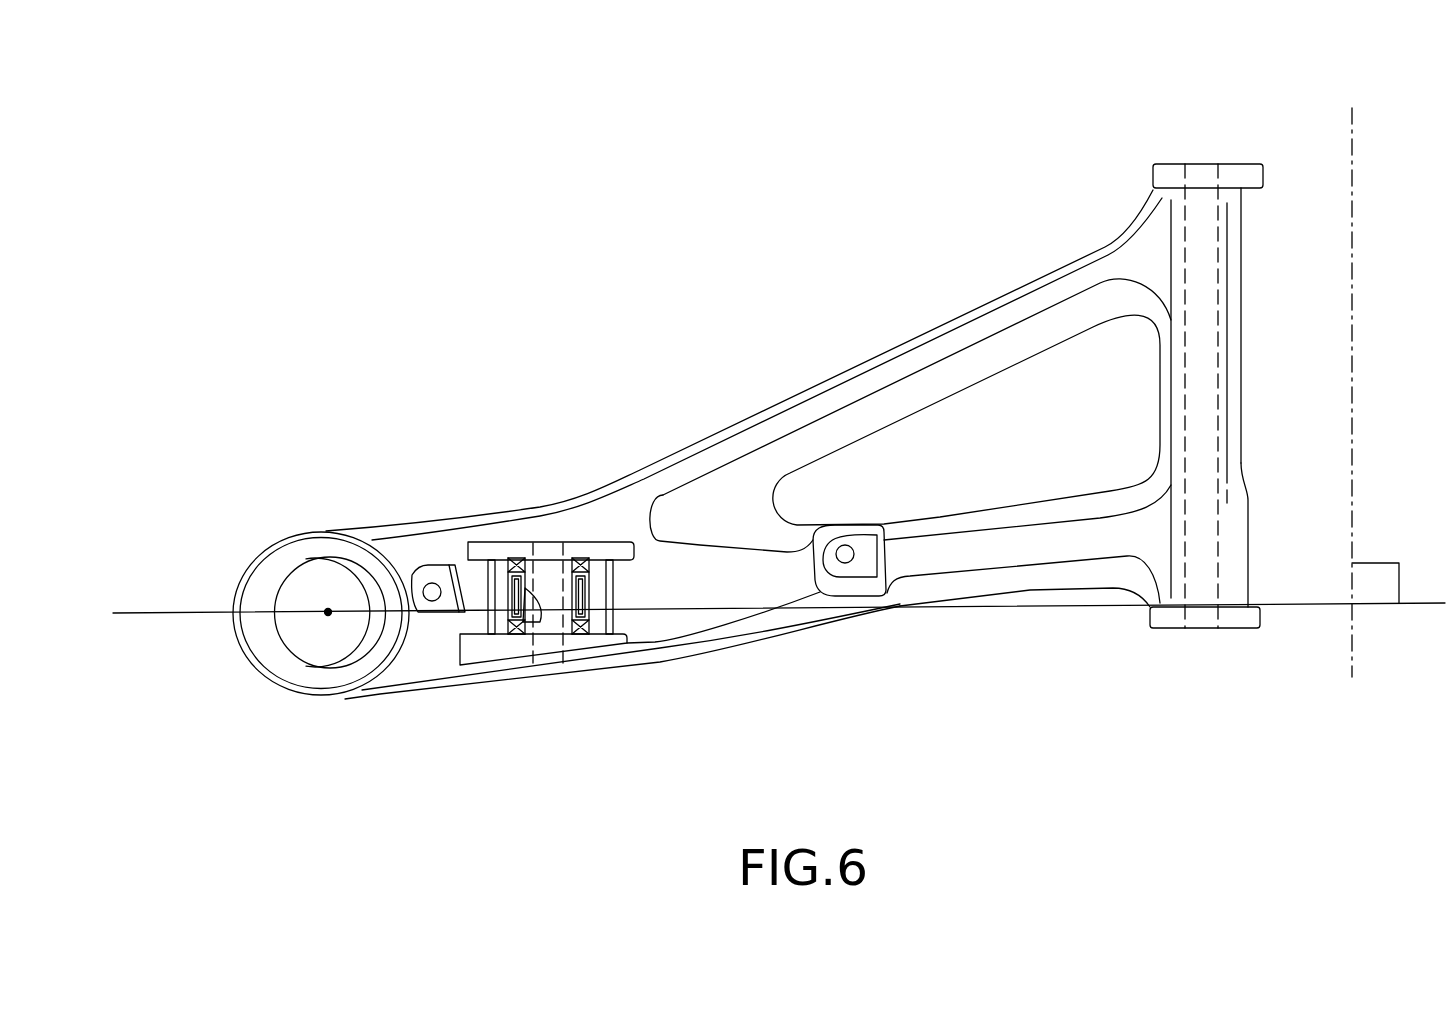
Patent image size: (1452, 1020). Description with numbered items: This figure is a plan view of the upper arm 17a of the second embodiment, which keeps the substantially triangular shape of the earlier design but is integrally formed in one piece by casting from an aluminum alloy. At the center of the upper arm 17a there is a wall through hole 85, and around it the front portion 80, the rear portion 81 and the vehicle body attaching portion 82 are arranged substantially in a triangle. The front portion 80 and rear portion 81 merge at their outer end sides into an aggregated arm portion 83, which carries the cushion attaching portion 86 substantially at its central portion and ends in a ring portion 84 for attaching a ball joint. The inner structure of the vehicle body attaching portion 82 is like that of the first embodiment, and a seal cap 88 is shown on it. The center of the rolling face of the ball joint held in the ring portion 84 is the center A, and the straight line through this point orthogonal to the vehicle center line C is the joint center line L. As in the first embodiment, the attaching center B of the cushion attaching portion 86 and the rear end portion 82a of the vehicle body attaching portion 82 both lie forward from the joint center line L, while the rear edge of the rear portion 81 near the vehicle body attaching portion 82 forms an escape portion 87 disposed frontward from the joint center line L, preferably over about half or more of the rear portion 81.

The upper arm 17a is at (520, 372).
The front portion 80 is at (888, 378).
The wall through hole 85 is at (990, 405).
The vehicle body attaching portion 82 is at (1240, 400).
The rear end portion 82a is at (1242, 598).
The seal cap 88 is at (1201, 174).
The vehicle center line C is at (1355, 170).
The joint center line L is at (160, 610).
The ring portion 84 is at (265, 651).
The center A is at (328, 609).
The aggregated arm portion 83 is at (422, 648).
The cushion attaching portion 86 is at (508, 548).
The attaching center B is at (546, 593).
The rear portion 81 is at (935, 590).
The escape portion 87 is at (1037, 590).